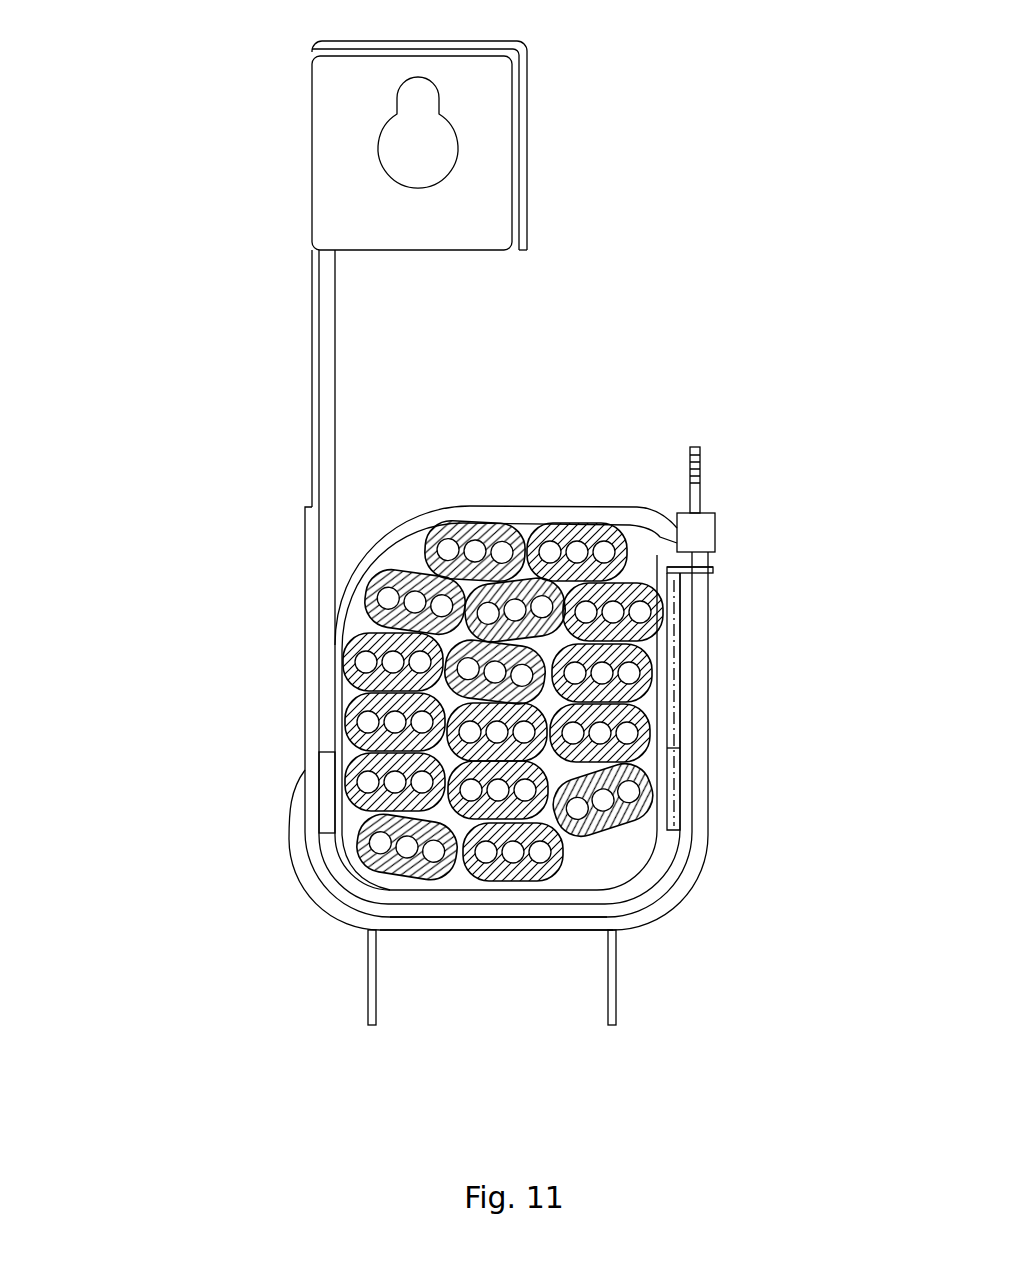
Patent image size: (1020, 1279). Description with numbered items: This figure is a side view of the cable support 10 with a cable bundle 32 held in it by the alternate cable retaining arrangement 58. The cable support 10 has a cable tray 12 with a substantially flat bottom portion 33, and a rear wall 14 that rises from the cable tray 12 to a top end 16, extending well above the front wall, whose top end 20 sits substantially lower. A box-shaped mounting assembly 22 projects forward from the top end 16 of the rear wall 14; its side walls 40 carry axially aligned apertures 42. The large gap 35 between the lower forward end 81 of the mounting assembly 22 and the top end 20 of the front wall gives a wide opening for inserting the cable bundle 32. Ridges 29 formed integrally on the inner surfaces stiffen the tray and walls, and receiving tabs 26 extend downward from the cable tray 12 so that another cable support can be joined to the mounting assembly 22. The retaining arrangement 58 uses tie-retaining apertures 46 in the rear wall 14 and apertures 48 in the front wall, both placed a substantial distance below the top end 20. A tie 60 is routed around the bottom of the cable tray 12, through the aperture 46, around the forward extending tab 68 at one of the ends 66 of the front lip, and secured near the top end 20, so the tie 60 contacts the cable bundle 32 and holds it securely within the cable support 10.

The cable support 10 is at (262, 338).
The cable tray 12 is at (462, 898).
The rear wall 14 is at (358, 333).
The top end 16 is at (318, 250).
The top end 20 is at (680, 575).
The box-shaped mounting assembly 22 is at (527, 93).
The receiving tabs 26 is at (368, 972).
The ridges 29 is at (323, 418).
The cable bundle 32 is at (592, 818).
The flat bottom portion 33 is at (510, 930).
The gap 35 is at (608, 403).
The side walls 40 is at (358, 221).
The apertures 42 is at (420, 149).
The tie-retaining apertures 46 is at (328, 793).
The tie-retaining apertures 48 is at (675, 797).
The cable retaining arrangement 58 is at (744, 518).
The tie 60 is at (706, 663).
The ends 66 is at (680, 572).
The forward extending tab 68 is at (713, 570).
The lower forward end 81 is at (525, 245).